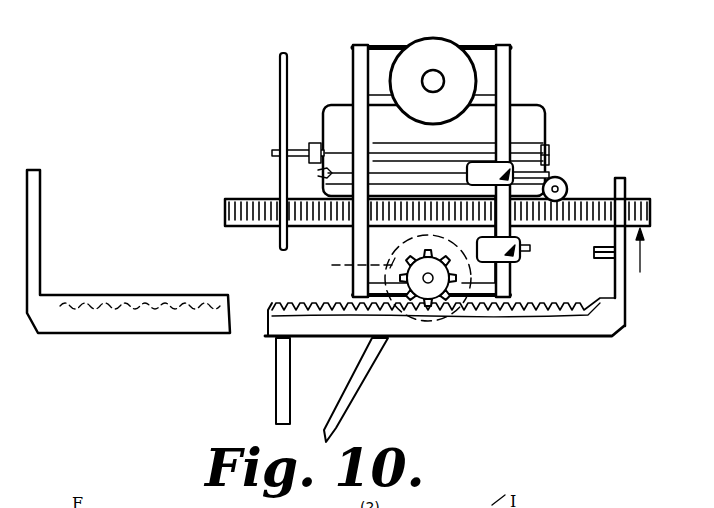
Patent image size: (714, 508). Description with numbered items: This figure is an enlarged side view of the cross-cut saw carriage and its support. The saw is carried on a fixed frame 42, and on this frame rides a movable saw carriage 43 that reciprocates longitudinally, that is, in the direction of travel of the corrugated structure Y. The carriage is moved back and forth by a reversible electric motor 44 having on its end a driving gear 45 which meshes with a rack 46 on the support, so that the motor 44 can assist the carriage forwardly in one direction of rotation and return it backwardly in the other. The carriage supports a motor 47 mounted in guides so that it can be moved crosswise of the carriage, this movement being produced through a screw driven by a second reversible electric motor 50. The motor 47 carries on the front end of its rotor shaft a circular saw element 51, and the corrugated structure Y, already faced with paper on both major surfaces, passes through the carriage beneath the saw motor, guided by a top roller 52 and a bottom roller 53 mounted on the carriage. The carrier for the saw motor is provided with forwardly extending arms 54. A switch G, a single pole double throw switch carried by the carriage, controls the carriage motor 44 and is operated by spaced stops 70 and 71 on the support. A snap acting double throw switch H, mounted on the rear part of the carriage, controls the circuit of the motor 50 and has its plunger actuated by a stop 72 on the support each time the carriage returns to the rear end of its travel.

The fixed frame 42 is at (455, 268).
The saw carriage 43 is at (516, 60).
The electric motor 44 is at (346, 265).
The driving gear 45 is at (437, 296).
The rack 46 is at (512, 303).
The motor 47 is at (520, 123).
The electric motor 50 is at (442, 57).
The circular saw element 51 is at (290, 90).
The top roller 52 is at (558, 180).
The bottom roller 53 is at (444, 234).
The forwardly extending arms 54 is at (367, 363).
The stop 70 is at (40, 175).
The stop 71 is at (628, 176).
The stop 72 is at (600, 258).
The switch G is at (513, 167).
The switch H is at (521, 241).
The corrugated structure Y is at (637, 260).